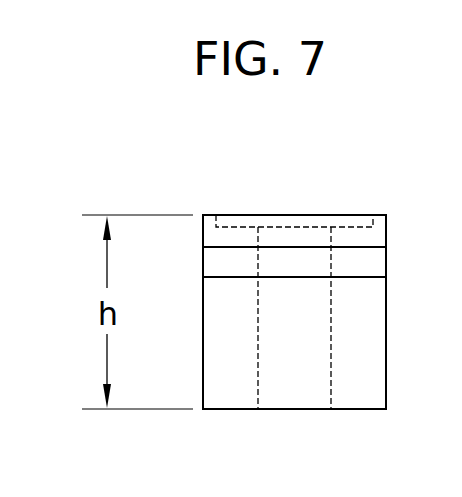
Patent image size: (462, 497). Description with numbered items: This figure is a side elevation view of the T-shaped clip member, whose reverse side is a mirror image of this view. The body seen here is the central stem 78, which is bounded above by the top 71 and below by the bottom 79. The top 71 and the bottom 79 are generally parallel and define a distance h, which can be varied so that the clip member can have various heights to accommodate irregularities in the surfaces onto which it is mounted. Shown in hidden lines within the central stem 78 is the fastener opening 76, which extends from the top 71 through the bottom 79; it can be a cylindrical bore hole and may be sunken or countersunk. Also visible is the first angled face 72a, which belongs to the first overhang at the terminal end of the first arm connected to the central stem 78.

The top 71 is at (211, 216).
The fastener opening 76 is at (290, 222).
The first angled face 72a is at (378, 263).
The central stem 78 is at (376, 374).
The bottom 79 is at (226, 410).